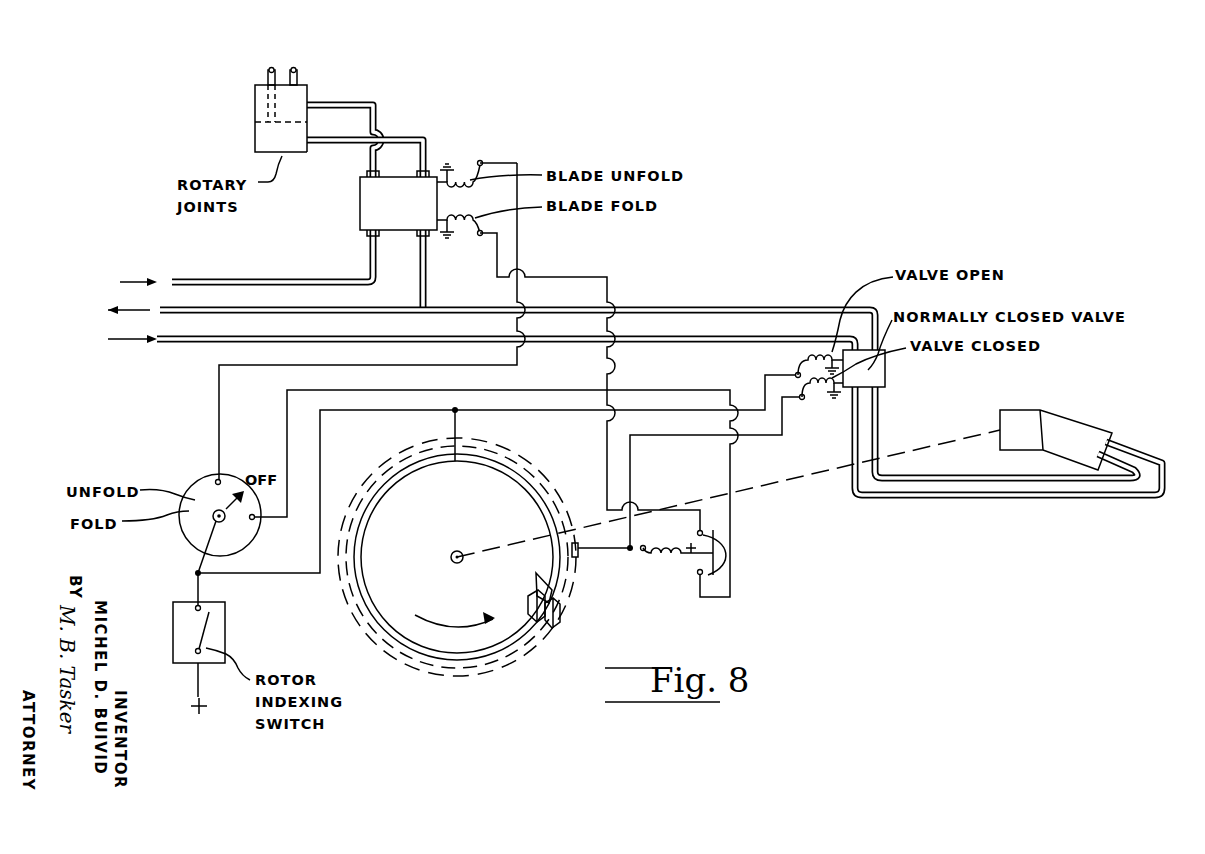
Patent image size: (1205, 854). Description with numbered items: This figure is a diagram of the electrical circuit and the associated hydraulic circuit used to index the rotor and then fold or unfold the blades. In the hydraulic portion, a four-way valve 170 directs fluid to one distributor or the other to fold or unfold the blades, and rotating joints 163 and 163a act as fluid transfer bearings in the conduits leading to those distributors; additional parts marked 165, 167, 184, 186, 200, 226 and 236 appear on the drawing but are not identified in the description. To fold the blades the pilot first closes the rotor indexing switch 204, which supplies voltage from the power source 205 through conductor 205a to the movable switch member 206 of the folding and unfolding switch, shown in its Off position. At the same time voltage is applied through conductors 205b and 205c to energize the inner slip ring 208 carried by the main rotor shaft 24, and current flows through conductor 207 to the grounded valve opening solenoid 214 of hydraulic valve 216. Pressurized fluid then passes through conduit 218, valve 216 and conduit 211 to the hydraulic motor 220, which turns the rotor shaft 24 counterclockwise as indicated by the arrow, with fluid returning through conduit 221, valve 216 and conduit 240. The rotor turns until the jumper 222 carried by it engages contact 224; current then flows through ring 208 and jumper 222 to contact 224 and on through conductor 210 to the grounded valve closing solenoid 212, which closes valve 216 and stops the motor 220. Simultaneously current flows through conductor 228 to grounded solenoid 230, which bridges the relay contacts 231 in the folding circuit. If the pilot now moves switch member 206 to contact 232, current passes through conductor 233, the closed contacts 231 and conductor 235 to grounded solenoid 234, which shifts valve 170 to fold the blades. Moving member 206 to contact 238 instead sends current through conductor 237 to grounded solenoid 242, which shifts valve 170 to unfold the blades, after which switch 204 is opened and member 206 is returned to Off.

The main rotor shaft 24 is at (459, 550).
The rotating joint 163 is at (298, 94).
The rotating joint 163a is at (258, 138).
The hydraulic line 165 is at (352, 104).
The rotary joint port 167 is at (290, 69).
The four-way valve 170 is at (360, 192).
The rotary joint port 184 is at (268, 74).
The return line 186 is at (420, 288).
The hydraulic line 200 is at (400, 139).
The rotor indexing switch 204 is at (213, 628).
The power source 205 is at (214, 705).
The conductor 205a is at (201, 585).
The conductor 205b is at (320, 475).
The conductor 205c is at (455, 420).
The movable switch member 206 is at (239, 539).
The conductor 207 is at (607, 425).
The inner slip ring 208 is at (386, 497).
The conductor 210 is at (630, 467).
The conduit 211 is at (898, 498).
The valve closing solenoid 212 is at (804, 399).
The valve opening solenoid 214 is at (806, 360).
The hydraulic valve 216 is at (885, 371).
The conduit 218 is at (323, 342).
The hydraulic motor 220 is at (1049, 412).
The conduit 221 is at (933, 478).
The jumper 222 is at (560, 613).
The contact 224 is at (580, 555).
The index ring 226 is at (494, 446).
The conductor 228 is at (624, 549).
The solenoid 230 is at (672, 564).
The relay contacts 231 is at (733, 561).
The contact 232 is at (256, 520).
The conductor 233 is at (518, 389).
The solenoid 234 is at (469, 237).
The conductor 235 is at (553, 277).
The supply line 236 is at (253, 282).
The conductor 237 is at (342, 367).
The contact 238 is at (215, 477).
The conduit 240 is at (268, 311).
The solenoid 242 is at (457, 177).